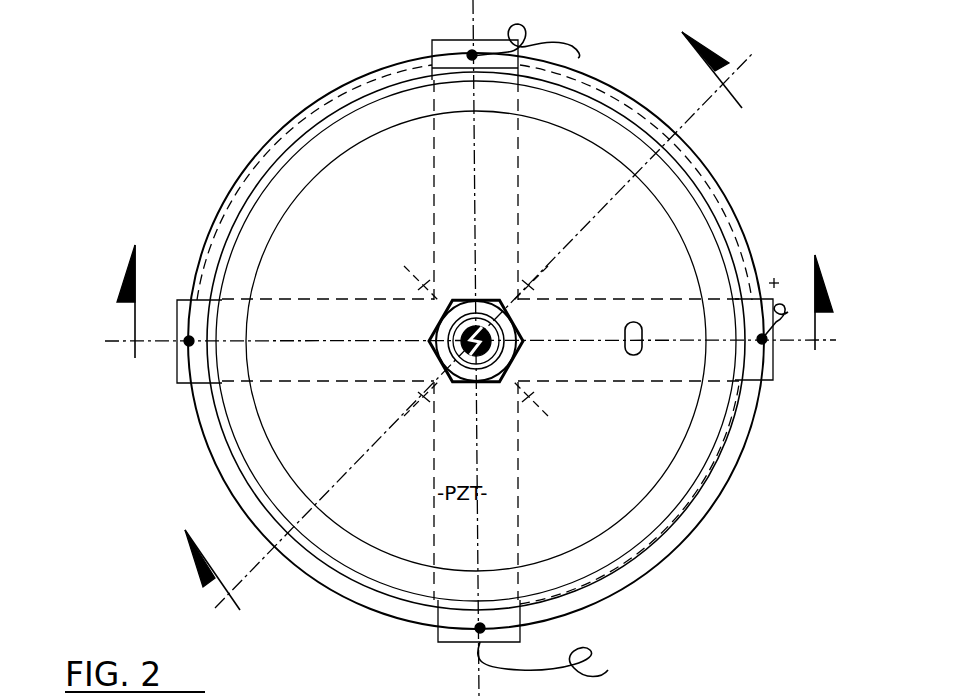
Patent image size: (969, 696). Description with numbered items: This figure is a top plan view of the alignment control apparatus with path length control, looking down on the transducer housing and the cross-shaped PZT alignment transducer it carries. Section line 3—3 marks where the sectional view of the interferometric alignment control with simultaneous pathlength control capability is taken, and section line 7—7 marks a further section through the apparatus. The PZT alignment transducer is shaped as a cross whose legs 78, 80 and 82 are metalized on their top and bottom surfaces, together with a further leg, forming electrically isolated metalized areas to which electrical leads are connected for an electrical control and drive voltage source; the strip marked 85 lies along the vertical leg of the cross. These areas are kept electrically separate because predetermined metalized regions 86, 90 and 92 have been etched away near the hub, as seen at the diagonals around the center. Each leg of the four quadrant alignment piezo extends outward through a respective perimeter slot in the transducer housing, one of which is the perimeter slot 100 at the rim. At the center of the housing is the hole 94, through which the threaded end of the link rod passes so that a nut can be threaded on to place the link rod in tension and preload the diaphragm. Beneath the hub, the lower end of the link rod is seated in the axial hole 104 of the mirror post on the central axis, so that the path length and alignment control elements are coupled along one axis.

The section line 3— 3 is at (153, 390).
The section line 7- 7 is at (754, 127).
The leg of the PZT alignment transducer 78 is at (476, 341).
The leg of the PZT alignment transducer 80 is at (515, 293).
The leg of the PZT alignment transducer 82 is at (481, 340).
The vertical electrode strip 85 is at (476, 190).
The etched-away metalized region 86 is at (528, 385).
The etched-away metalized region 90 is at (424, 288).
The etched-away metalized region 92 is at (425, 382).
The hole 94 is at (508, 316).
The perimeter slot 100 is at (430, 62).
The axial hole 104 is at (455, 305).